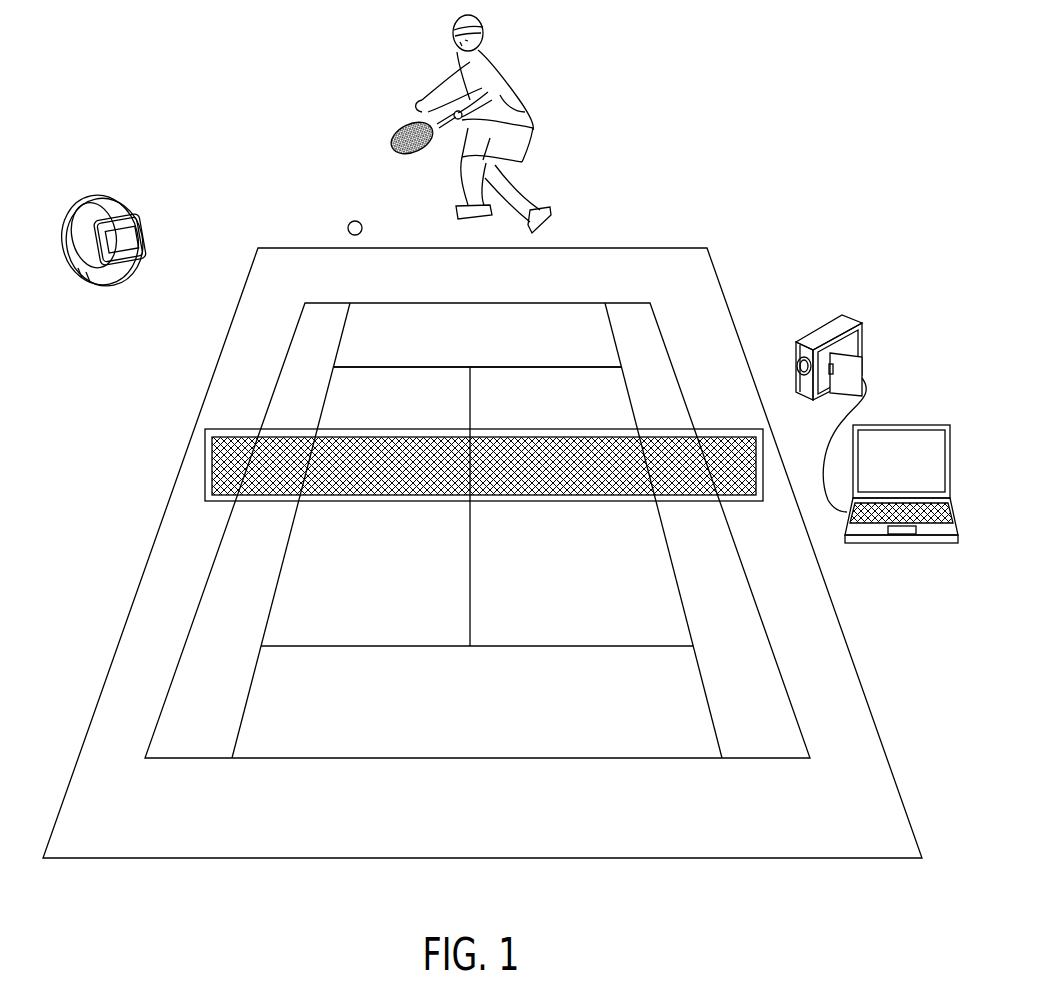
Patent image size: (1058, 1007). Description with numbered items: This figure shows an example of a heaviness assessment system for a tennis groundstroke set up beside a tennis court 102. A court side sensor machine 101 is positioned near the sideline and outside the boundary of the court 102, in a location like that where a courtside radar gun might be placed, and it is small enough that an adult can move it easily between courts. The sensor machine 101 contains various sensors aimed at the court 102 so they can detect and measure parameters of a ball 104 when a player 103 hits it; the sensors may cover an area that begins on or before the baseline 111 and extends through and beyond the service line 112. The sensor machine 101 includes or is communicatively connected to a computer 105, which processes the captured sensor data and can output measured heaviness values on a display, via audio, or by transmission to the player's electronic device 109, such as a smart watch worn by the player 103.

The court side sensor machine 101 is at (862, 328).
The tennis court 102 is at (303, 848).
The player 103 is at (452, 32).
The ball 104 is at (348, 227).
The computer 105 is at (915, 423).
The player's electronic device 109 is at (112, 278).
The baseline 111 is at (585, 300).
The service line 112 is at (600, 366).